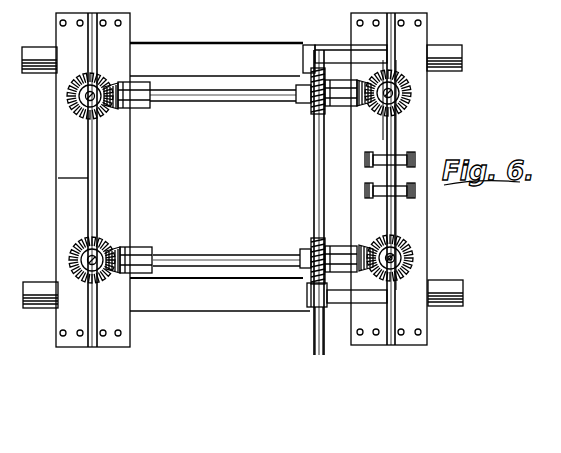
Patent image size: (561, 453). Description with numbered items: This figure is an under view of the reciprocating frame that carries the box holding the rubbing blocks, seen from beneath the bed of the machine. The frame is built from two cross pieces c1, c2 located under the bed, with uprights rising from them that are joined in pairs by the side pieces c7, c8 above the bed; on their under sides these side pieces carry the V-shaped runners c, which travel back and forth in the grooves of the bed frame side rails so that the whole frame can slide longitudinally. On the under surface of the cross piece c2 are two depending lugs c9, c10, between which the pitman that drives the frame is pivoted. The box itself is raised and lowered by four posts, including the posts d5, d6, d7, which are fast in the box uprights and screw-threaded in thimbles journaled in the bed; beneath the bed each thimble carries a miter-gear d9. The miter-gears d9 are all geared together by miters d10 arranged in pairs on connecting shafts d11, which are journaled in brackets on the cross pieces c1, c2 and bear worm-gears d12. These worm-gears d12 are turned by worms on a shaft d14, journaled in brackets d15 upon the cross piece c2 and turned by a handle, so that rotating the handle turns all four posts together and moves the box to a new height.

The runners c is at (38, 60).
The cross piece c1 is at (130, 170).
The cross piece c2 is at (414, 158).
The side piece c7 is at (253, 308).
The side piece c8 is at (215, 63).
The depending lug c9 is at (412, 150).
The depending lug c10 is at (414, 192).
The post d5 is at (393, 258).
The post d6 is at (392, 90).
The post d7 is at (96, 92).
The miter-gear d9 is at (440, 236).
The miter d10 is at (112, 108).
The connecting shaft d11 is at (217, 255).
The worm-gear d12 is at (312, 248).
The shaft d14 is at (314, 166).
The bracket d15 is at (306, 46).